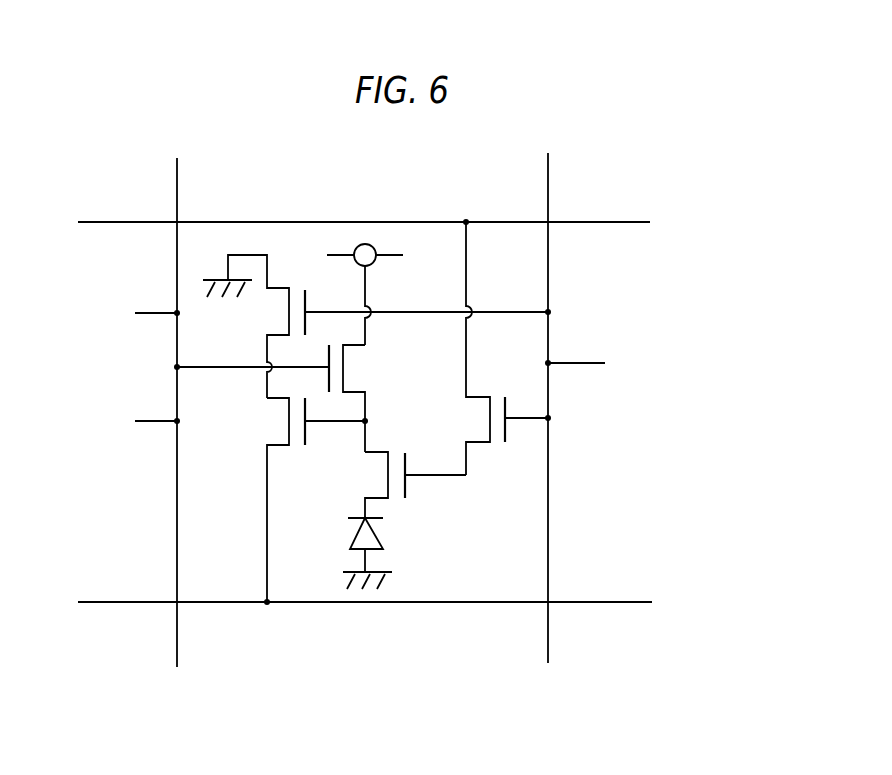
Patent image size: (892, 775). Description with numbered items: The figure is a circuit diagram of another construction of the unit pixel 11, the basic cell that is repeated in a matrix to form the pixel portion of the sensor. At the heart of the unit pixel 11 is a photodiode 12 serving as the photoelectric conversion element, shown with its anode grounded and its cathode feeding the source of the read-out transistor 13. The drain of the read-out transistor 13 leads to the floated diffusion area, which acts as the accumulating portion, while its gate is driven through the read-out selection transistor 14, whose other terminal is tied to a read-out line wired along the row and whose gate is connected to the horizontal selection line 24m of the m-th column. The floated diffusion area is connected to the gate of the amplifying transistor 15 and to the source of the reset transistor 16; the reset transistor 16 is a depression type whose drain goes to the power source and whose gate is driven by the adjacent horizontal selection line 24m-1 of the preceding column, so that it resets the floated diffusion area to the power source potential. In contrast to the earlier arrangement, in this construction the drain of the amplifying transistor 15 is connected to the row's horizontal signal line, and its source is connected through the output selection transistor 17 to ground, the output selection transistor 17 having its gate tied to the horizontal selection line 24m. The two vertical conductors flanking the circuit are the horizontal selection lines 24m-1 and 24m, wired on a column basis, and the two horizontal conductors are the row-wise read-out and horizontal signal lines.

The unit pixel 11 is at (672, 173).
The photodiode 12 is at (383, 533).
The read-out transistor 13 is at (375, 482).
The read-out selection transistor 14 is at (474, 418).
The amplifying transistor 15 is at (277, 422).
The reset transistor 16 is at (354, 367).
The output selection transistor 17 is at (276, 318).
The horizontal selection line 24m-1 is at (177, 637).
The horizontal selection line 24m is at (549, 633).